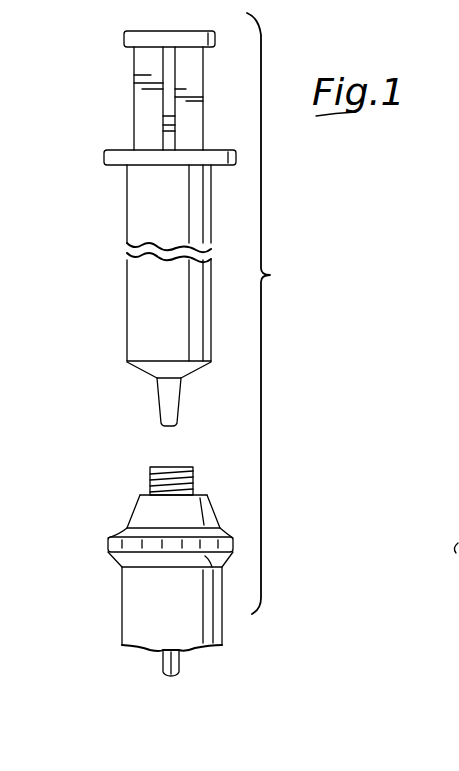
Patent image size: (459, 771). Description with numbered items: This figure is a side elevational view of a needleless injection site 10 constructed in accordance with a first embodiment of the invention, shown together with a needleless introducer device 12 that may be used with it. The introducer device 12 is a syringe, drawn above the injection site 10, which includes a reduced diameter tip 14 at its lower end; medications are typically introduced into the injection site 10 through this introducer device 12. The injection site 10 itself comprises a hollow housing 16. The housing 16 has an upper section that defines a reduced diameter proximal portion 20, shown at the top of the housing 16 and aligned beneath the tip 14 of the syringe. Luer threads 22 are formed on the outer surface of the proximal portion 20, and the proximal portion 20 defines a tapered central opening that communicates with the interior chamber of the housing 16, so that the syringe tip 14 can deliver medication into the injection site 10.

The needleless injection site 10 is at (120, 495).
The needleless introducer device 12 is at (108, 114).
The reduced diameter tip 14 is at (163, 410).
The hollow housing 16 is at (107, 578).
The reduced diameter proximal portion 20 is at (190, 467).
The Luer threads 22 is at (183, 478).